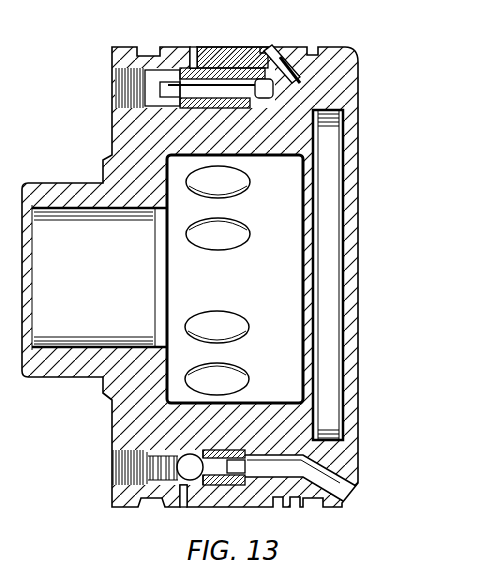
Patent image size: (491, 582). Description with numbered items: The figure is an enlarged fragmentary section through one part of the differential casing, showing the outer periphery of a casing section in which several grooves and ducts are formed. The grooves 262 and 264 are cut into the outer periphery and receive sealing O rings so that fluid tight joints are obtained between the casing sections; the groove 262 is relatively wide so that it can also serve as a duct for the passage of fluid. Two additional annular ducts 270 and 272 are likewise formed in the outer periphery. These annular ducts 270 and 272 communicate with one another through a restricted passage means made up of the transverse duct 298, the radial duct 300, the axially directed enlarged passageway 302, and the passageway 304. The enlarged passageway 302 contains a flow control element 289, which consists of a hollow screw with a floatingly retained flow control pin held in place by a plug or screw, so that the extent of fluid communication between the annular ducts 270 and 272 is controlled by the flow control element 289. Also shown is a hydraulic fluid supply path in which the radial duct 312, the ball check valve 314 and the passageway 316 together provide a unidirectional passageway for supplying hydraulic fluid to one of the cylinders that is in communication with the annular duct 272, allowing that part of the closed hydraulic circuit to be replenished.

The groove 262 is at (147, 50).
The groove 264 is at (317, 47).
The annular duct 270 is at (272, 52).
The annular duct 272 is at (284, 52).
The flow control element 289 is at (213, 112).
The transverse duct 298 is at (217, 50).
The radial duct 300 is at (193, 62).
The axially directed enlarged passageway 302 is at (147, 100).
The passageway 304 is at (292, 70).
The radial duct 312 is at (186, 500).
The ball check valve 314 is at (218, 490).
The passageway 316 is at (342, 493).